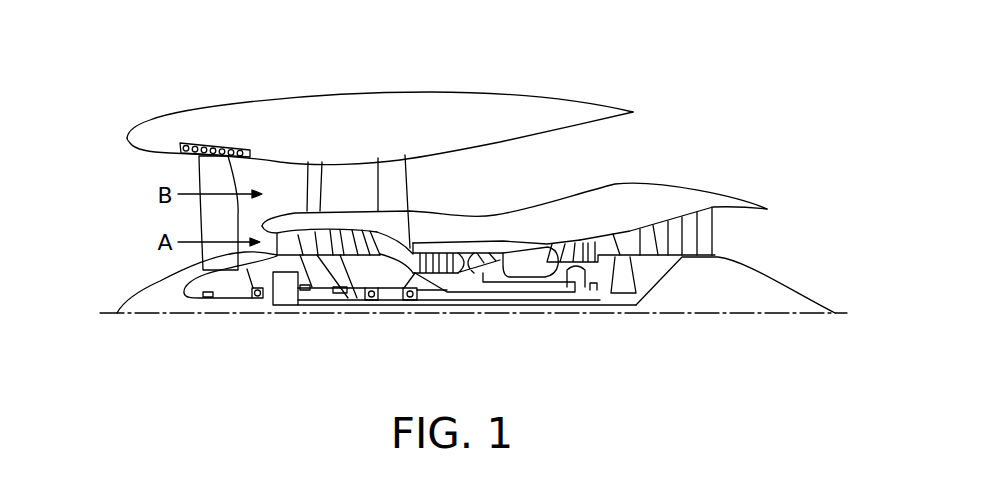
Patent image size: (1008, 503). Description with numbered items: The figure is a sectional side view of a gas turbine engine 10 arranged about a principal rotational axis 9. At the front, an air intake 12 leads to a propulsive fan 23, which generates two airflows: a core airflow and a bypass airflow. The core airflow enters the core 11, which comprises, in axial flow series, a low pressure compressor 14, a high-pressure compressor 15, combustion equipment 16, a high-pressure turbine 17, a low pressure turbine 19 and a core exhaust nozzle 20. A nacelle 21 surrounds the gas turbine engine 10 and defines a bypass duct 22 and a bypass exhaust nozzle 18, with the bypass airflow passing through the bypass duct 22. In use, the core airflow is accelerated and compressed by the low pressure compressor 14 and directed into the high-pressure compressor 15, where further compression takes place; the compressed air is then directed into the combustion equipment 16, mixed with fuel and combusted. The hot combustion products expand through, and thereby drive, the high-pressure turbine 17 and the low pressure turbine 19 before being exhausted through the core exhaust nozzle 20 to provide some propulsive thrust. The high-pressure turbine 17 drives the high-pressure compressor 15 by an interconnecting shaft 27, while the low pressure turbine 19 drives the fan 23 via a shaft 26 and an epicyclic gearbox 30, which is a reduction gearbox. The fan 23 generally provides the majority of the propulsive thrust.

The principal rotational axis 9 is at (736, 315).
The gas turbine engine 10 is at (167, 106).
The core 11 is at (540, 224).
The air intake 12 is at (133, 166).
The low pressure compressor 14 is at (343, 241).
The high-pressure compressor 15 is at (467, 260).
The combustion equipment 16 is at (524, 268).
The high-pressure turbine 17 is at (578, 248).
The bypass exhaust nozzle 18 is at (728, 107).
The low pressure turbine 19 is at (692, 245).
The core exhaust nozzle 20 is at (777, 242).
The nacelle 21 is at (390, 108).
The bypass duct 22 is at (583, 148).
The propulsive fan 23 is at (207, 228).
The shaft 26 is at (430, 303).
The interconnecting shaft 27 is at (487, 302).
The epicyclic gearbox 30 is at (285, 305).